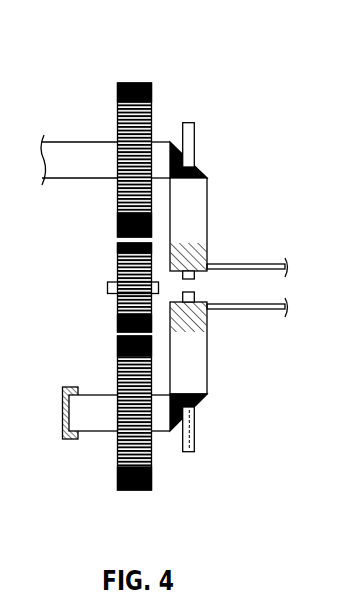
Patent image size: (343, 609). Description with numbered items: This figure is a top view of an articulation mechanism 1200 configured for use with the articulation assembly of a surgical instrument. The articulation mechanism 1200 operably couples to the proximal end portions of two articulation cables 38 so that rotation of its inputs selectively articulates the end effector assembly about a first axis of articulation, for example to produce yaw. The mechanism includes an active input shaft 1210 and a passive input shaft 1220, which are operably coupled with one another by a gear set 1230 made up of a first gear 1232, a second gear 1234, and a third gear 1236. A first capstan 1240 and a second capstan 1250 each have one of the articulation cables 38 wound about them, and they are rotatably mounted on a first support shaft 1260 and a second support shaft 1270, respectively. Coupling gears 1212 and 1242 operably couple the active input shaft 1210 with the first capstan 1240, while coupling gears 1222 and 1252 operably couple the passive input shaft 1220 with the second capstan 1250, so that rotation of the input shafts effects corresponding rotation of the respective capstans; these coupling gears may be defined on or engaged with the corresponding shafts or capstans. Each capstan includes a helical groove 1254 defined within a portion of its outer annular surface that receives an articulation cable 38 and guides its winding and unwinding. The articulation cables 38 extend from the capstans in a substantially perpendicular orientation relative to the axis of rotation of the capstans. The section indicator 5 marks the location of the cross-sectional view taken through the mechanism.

The articulation mechanism 1200 is at (246, 81).
The active input shaft 1210 is at (80, 140).
The coupling gear 1212 is at (172, 141).
The passive input shaft 1220 is at (98, 431).
The coupling gear 1222 is at (173, 432).
The gear set 1230 is at (76, 303).
The first gear 1232 is at (130, 82).
The second gear 1234 is at (130, 492).
The third gear 1236 is at (117, 258).
The first capstan 1240 is at (207, 192).
The coupling gear 1242 is at (202, 174).
The second capstan 1250 is at (207, 375).
The coupling gear 1252 is at (203, 401).
The helical groove 1254 is at (204, 238).
The first support shaft 1260 is at (195, 131).
The second support shaft 1270 is at (191, 453).
The articulation cable 38 is at (262, 264).
The section line for FIG. 5 is at (189, 279).